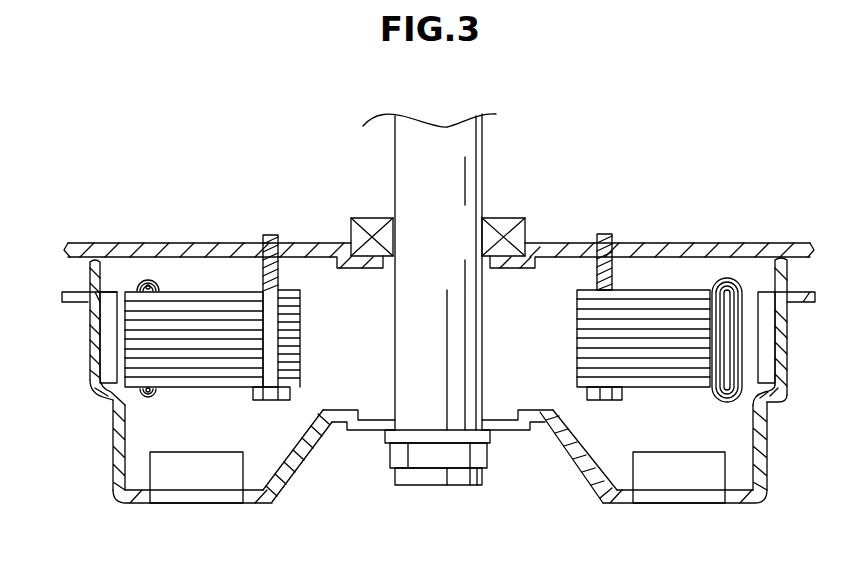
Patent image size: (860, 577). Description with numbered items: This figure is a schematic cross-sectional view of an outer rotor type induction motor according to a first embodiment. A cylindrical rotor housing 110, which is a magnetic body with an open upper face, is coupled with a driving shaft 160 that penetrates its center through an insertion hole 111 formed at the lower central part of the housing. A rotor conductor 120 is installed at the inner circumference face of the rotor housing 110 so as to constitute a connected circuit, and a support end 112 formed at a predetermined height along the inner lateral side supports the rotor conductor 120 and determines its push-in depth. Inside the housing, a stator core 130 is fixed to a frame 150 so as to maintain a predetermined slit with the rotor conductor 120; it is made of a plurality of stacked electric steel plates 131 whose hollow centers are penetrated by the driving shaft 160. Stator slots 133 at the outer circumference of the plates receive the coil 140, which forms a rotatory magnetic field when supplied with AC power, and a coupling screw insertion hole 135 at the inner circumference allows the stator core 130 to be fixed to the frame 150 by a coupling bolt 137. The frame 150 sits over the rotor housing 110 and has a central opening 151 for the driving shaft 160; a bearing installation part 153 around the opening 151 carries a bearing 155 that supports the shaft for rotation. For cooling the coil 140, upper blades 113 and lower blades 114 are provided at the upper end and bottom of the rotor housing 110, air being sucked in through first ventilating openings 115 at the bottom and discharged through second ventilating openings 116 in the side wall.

The rotor housing 110 is at (92, 367).
The insertion hole 111 is at (475, 420).
The support end 112 is at (100, 395).
The upper blades 113 is at (93, 278).
The lower blades 114 is at (197, 465).
The first ventilating openings 115 is at (187, 495).
The second ventilating openings 116 is at (120, 422).
The rotor conductor 120 is at (107, 328).
The stator core 130 is at (249, 287).
The electric steel plates 131 is at (215, 290).
The stator slots 133 is at (710, 335).
The coupling screw insertion hole 135 is at (273, 340).
The coupling bolt 137 is at (607, 235).
The coil 140 is at (143, 277).
The frame 150 is at (688, 248).
The opening 151 is at (487, 265).
The bearing installation part 153 is at (343, 265).
The bearing 155 is at (519, 228).
The driving shaft 160 is at (425, 417).